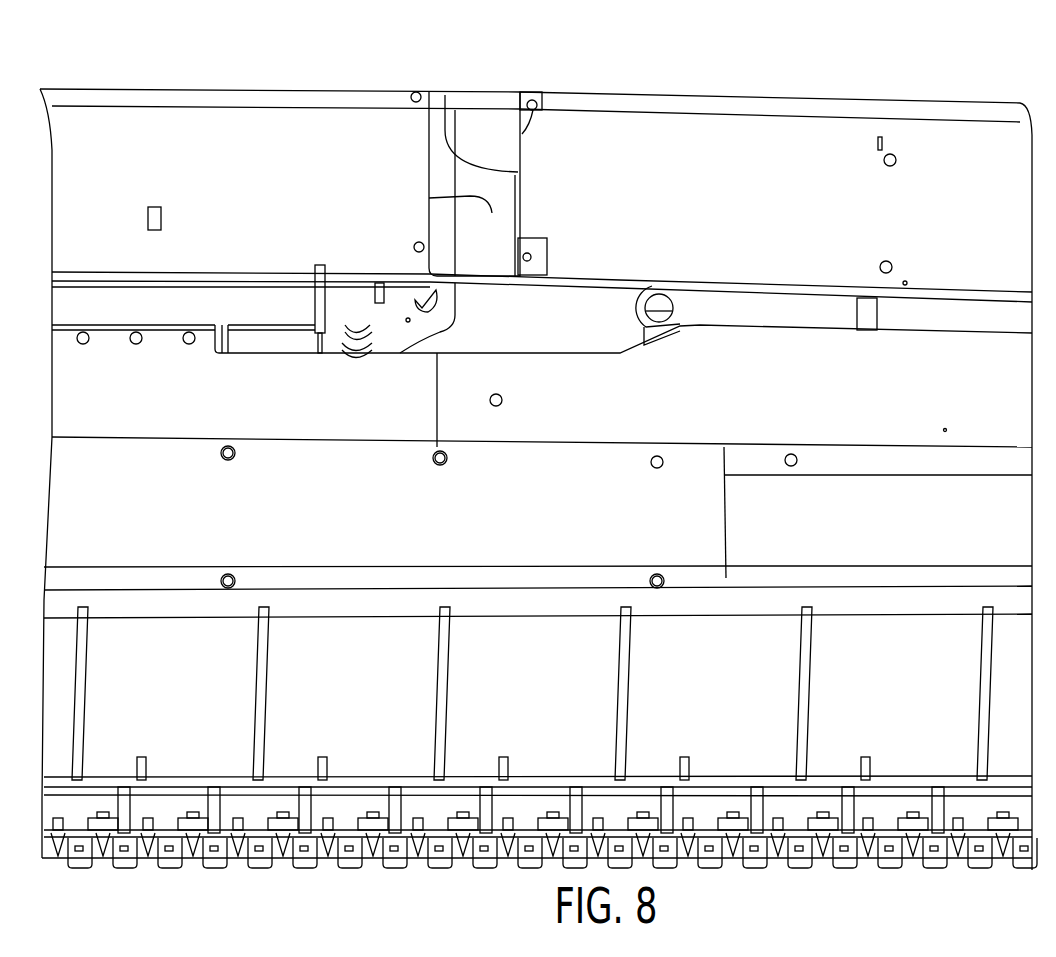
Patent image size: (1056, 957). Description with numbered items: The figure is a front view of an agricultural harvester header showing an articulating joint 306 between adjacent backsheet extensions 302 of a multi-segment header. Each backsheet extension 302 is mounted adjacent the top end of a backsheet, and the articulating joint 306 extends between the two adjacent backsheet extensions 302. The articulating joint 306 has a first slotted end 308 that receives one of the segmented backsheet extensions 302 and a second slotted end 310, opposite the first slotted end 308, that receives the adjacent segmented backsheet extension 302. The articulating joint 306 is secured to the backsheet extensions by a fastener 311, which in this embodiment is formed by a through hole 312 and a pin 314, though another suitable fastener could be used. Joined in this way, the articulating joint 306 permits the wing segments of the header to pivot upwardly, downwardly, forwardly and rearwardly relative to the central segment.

The backsheet extension 302 is at (141, 78).
The articulating joint 306 is at (502, 74).
The first slotted end 308 is at (446, 93).
The second slotted end 310 is at (466, 222).
The fastener 311 is at (378, 115).
The through hole 312 is at (534, 100).
The pin 314 is at (415, 92).